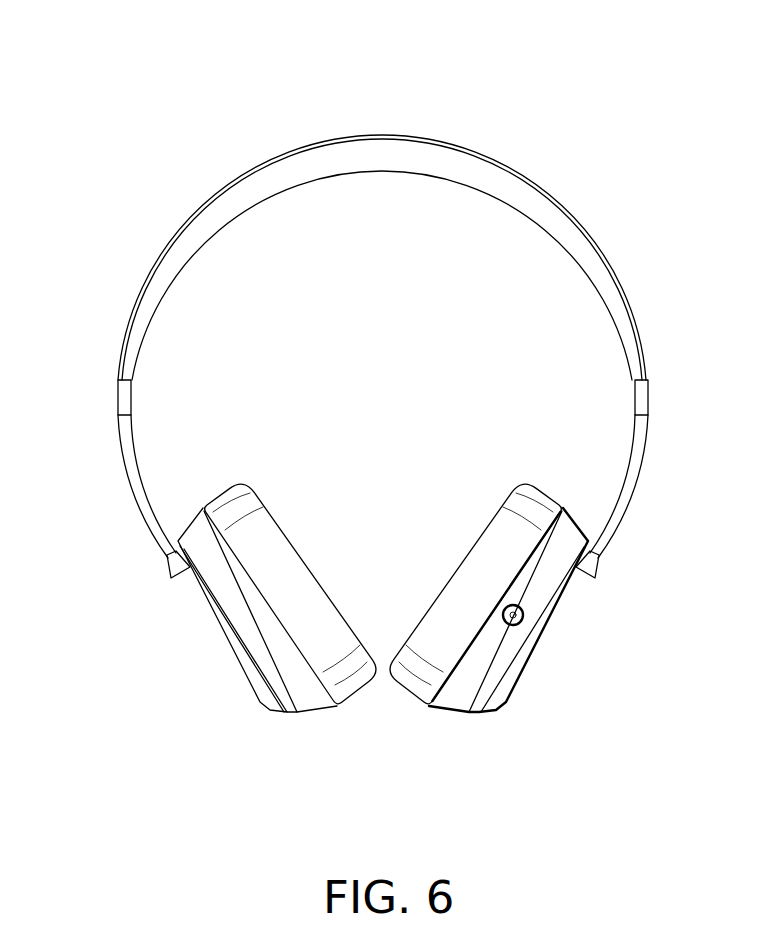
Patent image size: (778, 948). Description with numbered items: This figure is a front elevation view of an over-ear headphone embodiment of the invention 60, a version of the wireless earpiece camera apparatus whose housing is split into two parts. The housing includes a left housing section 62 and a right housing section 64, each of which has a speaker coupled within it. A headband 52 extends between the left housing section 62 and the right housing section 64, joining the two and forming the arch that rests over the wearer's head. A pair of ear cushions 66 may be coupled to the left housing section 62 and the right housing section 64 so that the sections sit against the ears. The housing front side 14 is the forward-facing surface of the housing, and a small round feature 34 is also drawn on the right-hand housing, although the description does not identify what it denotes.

The over-ear headphone embodiment 60 is at (583, 118).
The headband 52 is at (408, 165).
The housing front side 14 is at (540, 588).
The button 34 is at (523, 618).
The left housing section 62 is at (457, 695).
The right housing section 64 is at (315, 690).
The ear cushions 66 is at (482, 598).